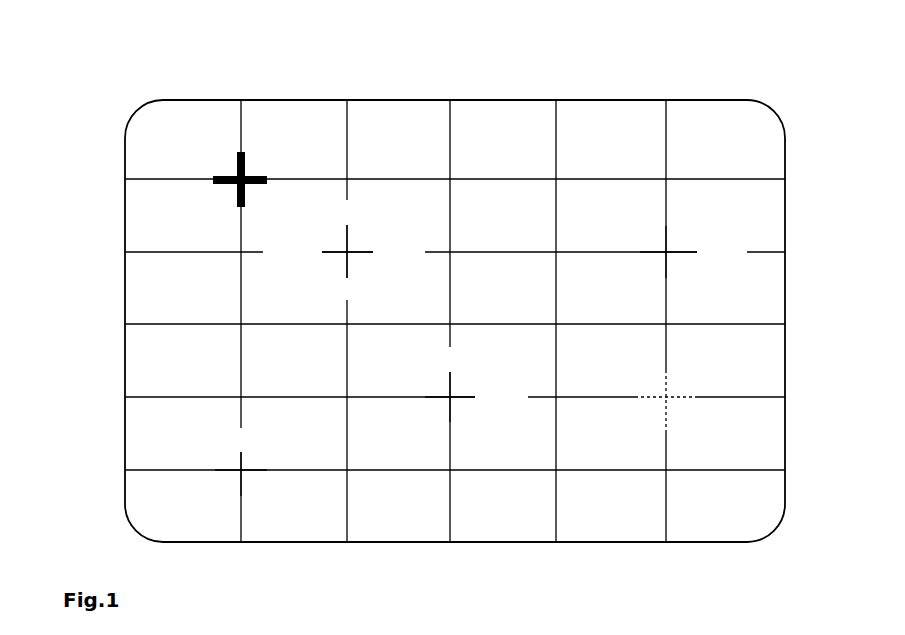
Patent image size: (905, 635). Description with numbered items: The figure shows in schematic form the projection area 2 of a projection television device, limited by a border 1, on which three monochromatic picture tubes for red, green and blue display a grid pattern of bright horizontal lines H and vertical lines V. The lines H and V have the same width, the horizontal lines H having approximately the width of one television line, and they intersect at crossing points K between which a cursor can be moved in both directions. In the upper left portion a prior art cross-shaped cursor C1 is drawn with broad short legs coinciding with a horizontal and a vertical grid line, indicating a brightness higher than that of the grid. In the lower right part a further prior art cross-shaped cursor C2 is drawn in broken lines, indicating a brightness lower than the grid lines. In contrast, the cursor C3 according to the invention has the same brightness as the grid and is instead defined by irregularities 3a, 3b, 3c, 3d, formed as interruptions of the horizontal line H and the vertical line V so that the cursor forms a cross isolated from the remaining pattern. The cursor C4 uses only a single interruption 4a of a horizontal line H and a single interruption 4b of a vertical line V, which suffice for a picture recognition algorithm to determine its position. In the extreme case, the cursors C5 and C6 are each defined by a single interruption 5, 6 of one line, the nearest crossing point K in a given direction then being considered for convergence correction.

The border 1 is at (125, 130).
The projection area 2 is at (607, 76).
The vertical line V is at (348, 130).
The horizontal line H is at (160, 255).
The crossing point K is at (452, 178).
The cross-shaped cursor C1 is at (252, 165).
The cross-shaped cursor C2 is at (675, 393).
The cursor C3 is at (356, 245).
The irregularity 3a is at (399, 256).
The irregularity 3b is at (340, 215).
The irregularity 3c is at (294, 256).
The irregularity 3d is at (340, 290).
The cursor C4 is at (445, 401).
The interruption 4a is at (500, 392).
The interruption 4b is at (445, 361).
The cursor C5 is at (662, 247).
The interruption 5 is at (720, 250).
The cursor C6 is at (247, 466).
The interruption 6 is at (228, 438).